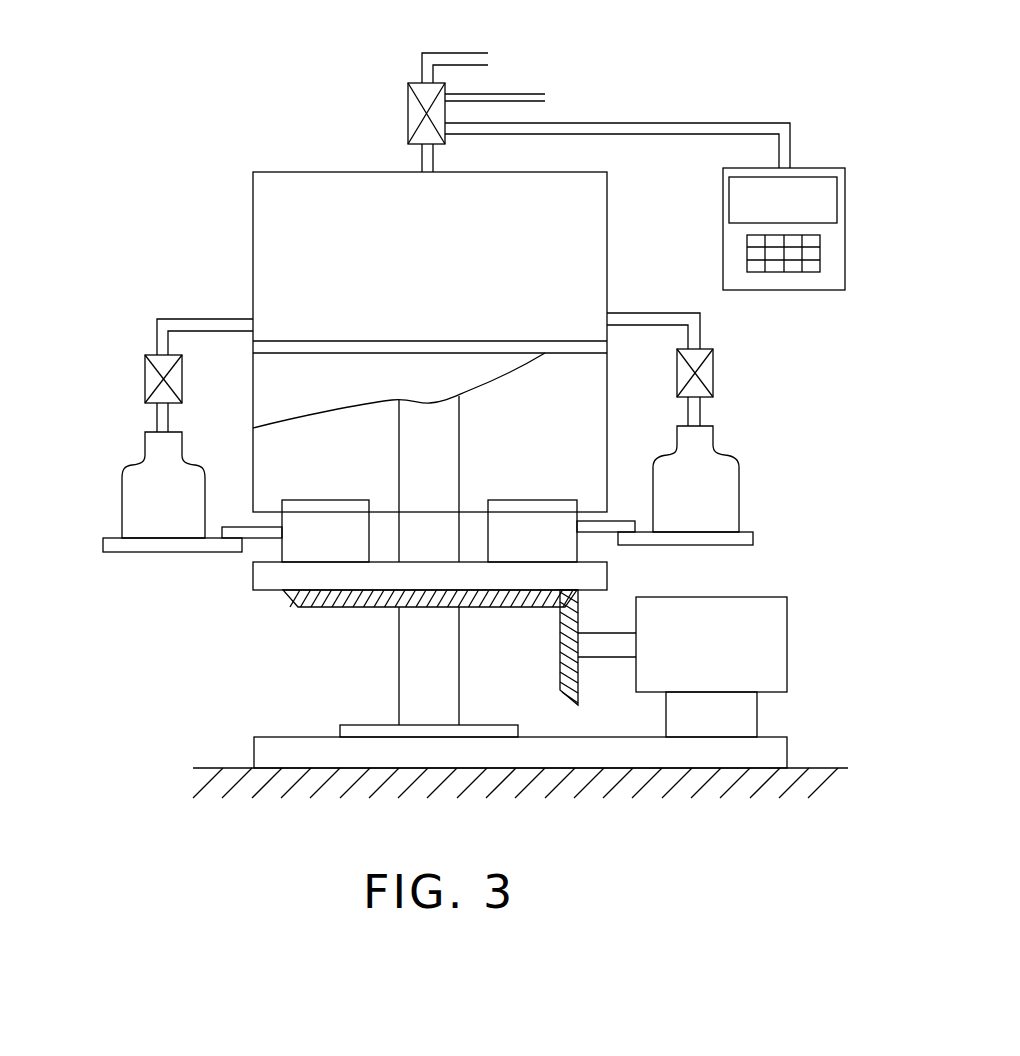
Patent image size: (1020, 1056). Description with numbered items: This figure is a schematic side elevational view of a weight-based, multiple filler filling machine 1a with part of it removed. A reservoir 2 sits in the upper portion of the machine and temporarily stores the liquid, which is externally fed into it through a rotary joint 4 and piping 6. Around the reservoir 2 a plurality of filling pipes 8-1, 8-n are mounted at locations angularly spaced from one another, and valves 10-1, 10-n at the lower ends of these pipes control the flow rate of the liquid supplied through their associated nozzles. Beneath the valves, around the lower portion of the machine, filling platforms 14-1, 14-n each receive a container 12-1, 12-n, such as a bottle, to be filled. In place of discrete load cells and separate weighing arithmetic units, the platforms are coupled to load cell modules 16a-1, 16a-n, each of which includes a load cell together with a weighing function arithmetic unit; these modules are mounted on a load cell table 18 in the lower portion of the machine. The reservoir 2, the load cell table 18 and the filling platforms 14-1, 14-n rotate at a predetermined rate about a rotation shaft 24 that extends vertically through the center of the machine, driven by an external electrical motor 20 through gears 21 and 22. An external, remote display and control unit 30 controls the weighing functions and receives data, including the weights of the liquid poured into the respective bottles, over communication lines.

The filling machine 1a is at (350, 152).
The reservoir 2 is at (590, 242).
The rotary joint 4 is at (417, 117).
The piping 6 is at (460, 58).
The filling pipe 8-1 is at (220, 323).
The filling pipe 8-n is at (655, 315).
The valve 10-1 is at (153, 378).
The valve 10-n is at (703, 378).
The container 12-1 is at (128, 498).
The container 12-n is at (728, 488).
The filling platform 14-1 is at (160, 545).
The filling platform 14-n is at (750, 535).
The load cell module 16a-1 is at (332, 510).
The load cell module 16a-n is at (547, 510).
The load cell table 18 is at (268, 582).
The electrical motor 20 is at (772, 642).
The gear 21 is at (570, 694).
The gear 22 is at (380, 598).
The rotation shaft 24 is at (447, 683).
The display and control unit 30 is at (805, 178).